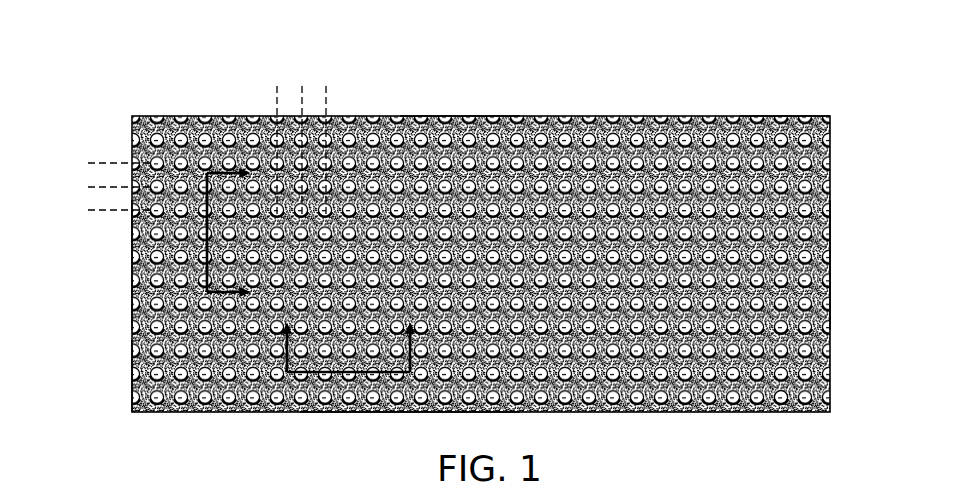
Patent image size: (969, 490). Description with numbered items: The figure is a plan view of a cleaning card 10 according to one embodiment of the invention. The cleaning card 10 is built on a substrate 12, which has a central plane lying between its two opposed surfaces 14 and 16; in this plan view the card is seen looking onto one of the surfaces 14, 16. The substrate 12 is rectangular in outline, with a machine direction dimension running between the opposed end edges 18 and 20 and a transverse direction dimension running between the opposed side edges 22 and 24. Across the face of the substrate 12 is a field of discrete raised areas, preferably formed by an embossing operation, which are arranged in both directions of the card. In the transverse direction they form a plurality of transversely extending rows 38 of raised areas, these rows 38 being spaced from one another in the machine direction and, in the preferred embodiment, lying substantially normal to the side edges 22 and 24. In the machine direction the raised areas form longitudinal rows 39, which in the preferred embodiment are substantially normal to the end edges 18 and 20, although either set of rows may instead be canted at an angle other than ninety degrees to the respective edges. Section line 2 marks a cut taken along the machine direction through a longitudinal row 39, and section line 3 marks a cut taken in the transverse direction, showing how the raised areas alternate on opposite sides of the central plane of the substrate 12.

The cleaning card 10 is at (651, 99).
The substrate 12 is at (801, 113).
The opposed surface 14 is at (771, 393).
The opposed surface 16 is at (131, 367).
The end edge 18 is at (832, 280).
The end edge 20 is at (131, 269).
The side edge 22 is at (457, 115).
The side edge 24 is at (418, 413).
The transversely extending rows 38 is at (326, 88).
The longitudinal rows 39 is at (88, 210).
The section line 3- 3 is at (228, 232).
The section line 2- 2 is at (350, 337).